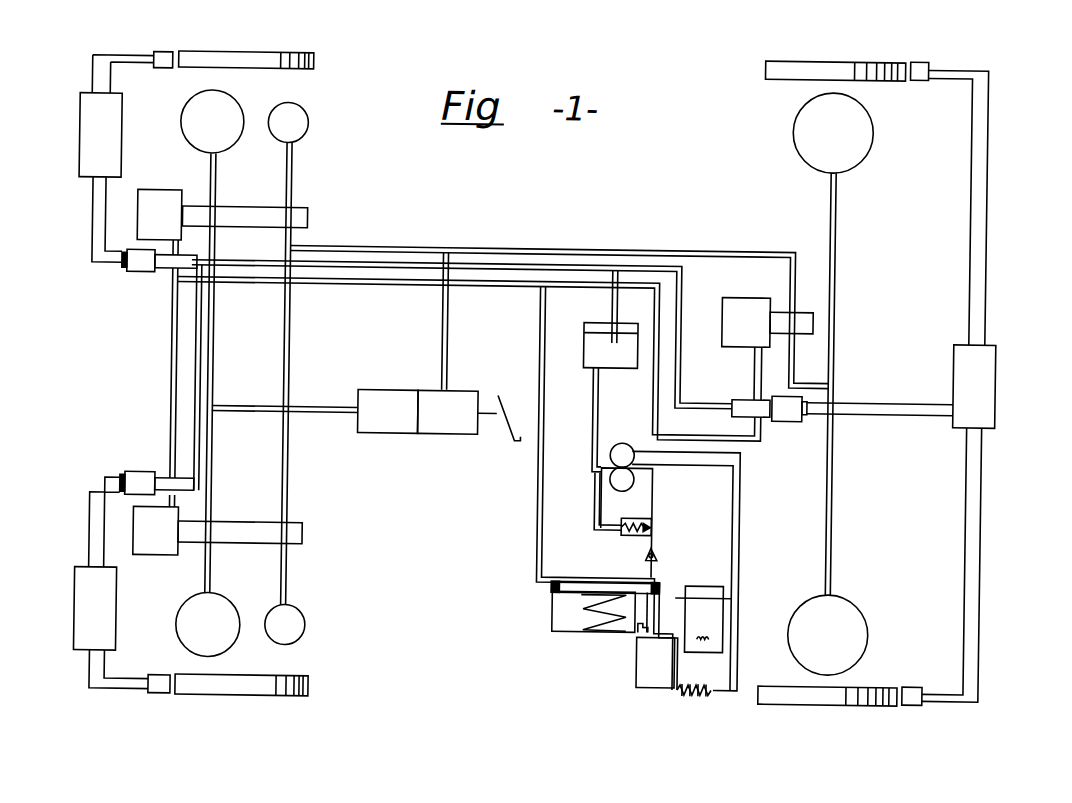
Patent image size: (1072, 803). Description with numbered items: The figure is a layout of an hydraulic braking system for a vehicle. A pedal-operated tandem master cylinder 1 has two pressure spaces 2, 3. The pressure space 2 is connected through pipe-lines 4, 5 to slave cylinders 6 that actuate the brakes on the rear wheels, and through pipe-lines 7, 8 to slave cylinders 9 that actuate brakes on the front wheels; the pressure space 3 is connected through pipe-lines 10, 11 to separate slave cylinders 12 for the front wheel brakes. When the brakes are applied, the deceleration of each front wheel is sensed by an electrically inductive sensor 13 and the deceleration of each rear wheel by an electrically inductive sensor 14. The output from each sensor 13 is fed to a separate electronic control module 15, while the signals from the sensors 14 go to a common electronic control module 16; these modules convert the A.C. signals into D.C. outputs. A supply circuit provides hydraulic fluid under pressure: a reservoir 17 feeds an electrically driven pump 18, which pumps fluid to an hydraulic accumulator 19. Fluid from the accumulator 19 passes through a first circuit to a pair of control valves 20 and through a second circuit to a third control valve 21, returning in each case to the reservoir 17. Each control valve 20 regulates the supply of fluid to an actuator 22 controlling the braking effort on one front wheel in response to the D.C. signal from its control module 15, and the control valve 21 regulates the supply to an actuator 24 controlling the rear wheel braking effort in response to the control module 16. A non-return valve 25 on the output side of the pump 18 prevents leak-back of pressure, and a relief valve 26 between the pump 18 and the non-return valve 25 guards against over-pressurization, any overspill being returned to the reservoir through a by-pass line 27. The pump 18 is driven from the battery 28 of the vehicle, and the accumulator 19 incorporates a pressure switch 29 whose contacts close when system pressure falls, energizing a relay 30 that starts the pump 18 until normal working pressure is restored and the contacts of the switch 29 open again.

The tandem master cylinder 1 is at (439, 444).
The pressure space 2 is at (452, 426).
The pressure space 3 is at (385, 424).
The pipe-line 4 is at (542, 252).
The pipe-line 5 is at (834, 251).
The slave cylinder 6 is at (862, 126).
The pipe-line 7 is at (390, 250).
The pipe-line 8 is at (287, 188).
The slave cylinder 9 is at (292, 130).
The pipe-line 10 is at (323, 411).
The pipe-line 11 is at (213, 367).
The slave cylinder 12 is at (214, 114).
The electrically inductive sensor 13 is at (309, 64).
The electrically inductive sensor 14 is at (895, 75).
The electronic control module 15 is at (94, 151).
The electronic control module 16 is at (975, 379).
The reservoir 17 is at (596, 352).
The pump 18 is at (620, 455).
The hydraulic accumulator 19 is at (564, 614).
The control valve 20 is at (140, 267).
The control valve 21 is at (787, 407).
The actuator 22 is at (157, 215).
The actuator 24 is at (748, 316).
The non-return valve 25 is at (658, 550).
The relief valve 26 is at (653, 517).
The by-pass line 27 is at (597, 509).
The battery 28 is at (680, 688).
The pressure switch 29 is at (640, 631).
The relay 30 is at (701, 595).